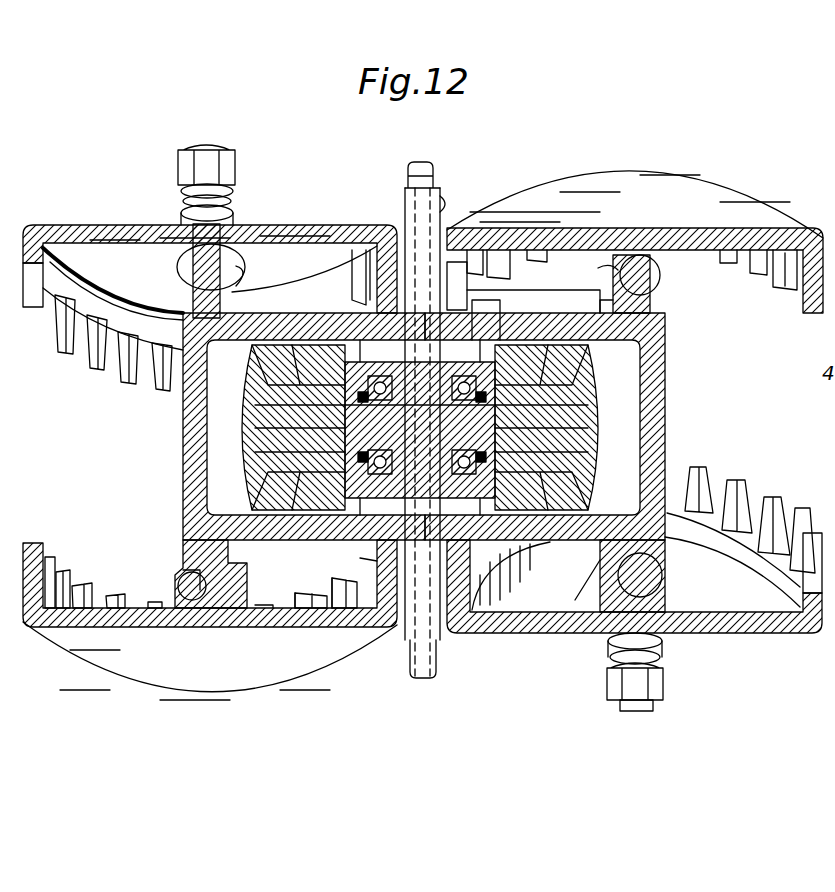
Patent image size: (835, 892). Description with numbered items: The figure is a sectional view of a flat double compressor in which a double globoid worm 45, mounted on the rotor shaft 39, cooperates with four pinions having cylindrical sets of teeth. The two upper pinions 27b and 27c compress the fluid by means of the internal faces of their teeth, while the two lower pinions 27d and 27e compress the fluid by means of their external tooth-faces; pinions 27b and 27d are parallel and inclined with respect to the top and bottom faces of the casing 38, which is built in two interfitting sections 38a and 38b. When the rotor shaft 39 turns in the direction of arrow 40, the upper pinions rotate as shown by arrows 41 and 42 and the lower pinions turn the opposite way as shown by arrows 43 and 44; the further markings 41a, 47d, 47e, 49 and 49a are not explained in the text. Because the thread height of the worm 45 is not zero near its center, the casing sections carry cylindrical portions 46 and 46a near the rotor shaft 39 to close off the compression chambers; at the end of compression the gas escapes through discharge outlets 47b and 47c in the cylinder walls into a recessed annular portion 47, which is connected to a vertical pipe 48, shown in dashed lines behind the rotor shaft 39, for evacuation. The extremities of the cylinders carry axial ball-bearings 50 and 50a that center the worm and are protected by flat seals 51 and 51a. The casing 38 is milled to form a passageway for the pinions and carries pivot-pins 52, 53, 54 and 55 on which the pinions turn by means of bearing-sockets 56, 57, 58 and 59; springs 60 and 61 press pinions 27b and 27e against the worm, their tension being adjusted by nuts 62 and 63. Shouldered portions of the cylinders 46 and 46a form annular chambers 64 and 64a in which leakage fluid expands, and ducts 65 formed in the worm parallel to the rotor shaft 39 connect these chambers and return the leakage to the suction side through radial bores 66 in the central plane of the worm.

The upper pinion 27b is at (62, 232).
The upper pinion 27c is at (770, 202).
The lower pinion 27d is at (300, 628).
The lower pinion 27e is at (762, 633).
The casing 38 is at (665, 398).
The casing section 38a is at (660, 354).
The casing section 38b is at (183, 430).
The rotor shaft 39 is at (405, 218).
The arrow 40 is at (445, 203).
The arrow 41 is at (252, 272).
The gear tooth 41a is at (364, 525).
The arrow 42 is at (640, 278).
The arrow 43 is at (178, 590).
The arrow 44 is at (600, 572).
The globoid worm 45 is at (586, 429).
The cylindrical portion 46 is at (450, 380).
The cylindrical portion 46a is at (500, 545).
The recessed annular portion 47 is at (485, 335).
The discharge outlet 47b is at (356, 313).
The discharge outlet 47c is at (470, 340).
The gear teeth 47d is at (340, 535).
The gear teeth 47e is at (475, 548).
The vertical pipe 48 is at (434, 172).
The washer 49 is at (236, 214).
The washer 49a is at (656, 709).
The axial ball-bearing 50 is at (465, 340).
The axial ball-bearing 50a is at (382, 520).
The flat seal 51 is at (285, 407).
The flat seal 51a is at (285, 454).
The pivot-pin 52 is at (200, 300).
The pivot-pin 53 is at (652, 312).
The pivot-pin 54 is at (205, 558).
The pivot-pin 55 is at (650, 587).
The bearing-socket 56 is at (178, 262).
The bearing-socket 57 is at (672, 293).
The bearing-socket 58 is at (176, 572).
The bearing-socket 59 is at (662, 570).
The spring 60 is at (181, 207).
The spring 61 is at (664, 647).
The nut 62 is at (238, 170).
The nut 63 is at (666, 686).
The annular chamber 64 is at (285, 385).
The annular chamber 64a is at (290, 472).
The duct 65 is at (588, 411).
The radial bore 66 is at (262, 427).